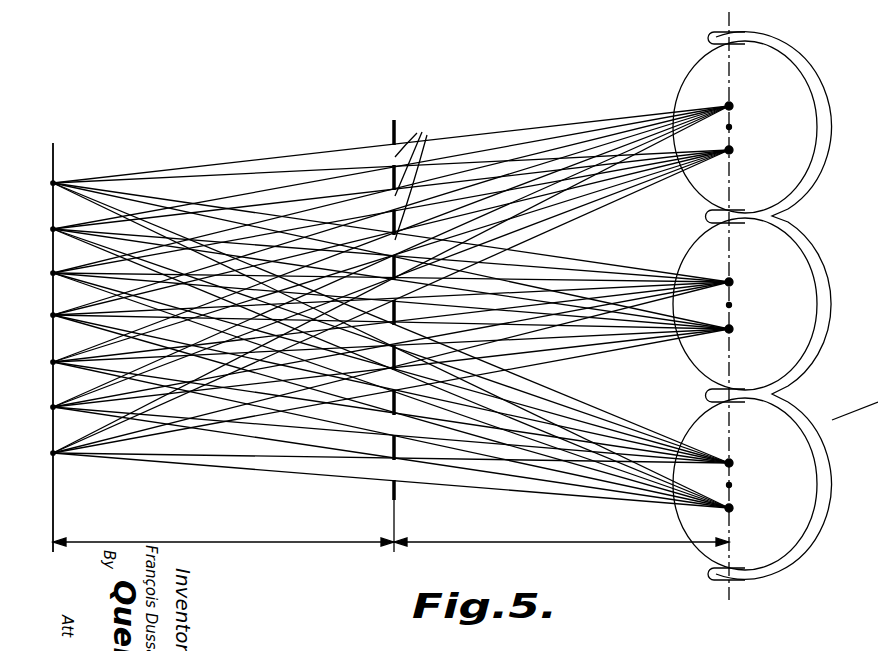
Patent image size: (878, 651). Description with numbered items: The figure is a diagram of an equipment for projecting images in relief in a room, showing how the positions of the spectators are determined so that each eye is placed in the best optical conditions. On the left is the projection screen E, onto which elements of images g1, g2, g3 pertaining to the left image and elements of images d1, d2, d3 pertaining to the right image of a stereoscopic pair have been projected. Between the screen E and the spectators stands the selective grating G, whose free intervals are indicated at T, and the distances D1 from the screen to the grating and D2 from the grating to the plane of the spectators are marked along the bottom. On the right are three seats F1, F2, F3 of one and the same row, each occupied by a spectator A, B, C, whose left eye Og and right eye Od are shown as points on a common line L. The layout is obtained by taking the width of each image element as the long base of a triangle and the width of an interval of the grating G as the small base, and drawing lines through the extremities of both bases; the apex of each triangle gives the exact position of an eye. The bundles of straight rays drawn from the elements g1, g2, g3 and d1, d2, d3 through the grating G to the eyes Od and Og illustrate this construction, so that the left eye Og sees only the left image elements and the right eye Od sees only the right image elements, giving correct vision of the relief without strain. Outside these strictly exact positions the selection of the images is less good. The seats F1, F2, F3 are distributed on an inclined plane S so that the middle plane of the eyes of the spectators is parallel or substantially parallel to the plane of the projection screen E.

The projection screen E is at (52, 307).
The right image element d3 is at (52, 202).
The left image element g3 is at (52, 250).
The right image element d2 is at (52, 290).
The left image element g2 is at (53, 340).
The right image element d1 is at (50, 393).
The left image element g1 is at (50, 432).
The selective grating G is at (392, 487).
The grating slits T is at (412, 175).
The distance screen to grating D1 is at (223, 532).
The distance grating to observer D2 is at (561, 532).
The seat F3 is at (817, 88).
The seat F2 is at (825, 300).
The seat F1 is at (820, 473).
The right eye Od is at (746, 280).
The left eye Og is at (746, 327).
The spectator A is at (740, 485).
The spectator B is at (740, 305).
The spectator C is at (740, 127).
The inclined plane S is at (700, 553).
The observer line L is at (855, 400).